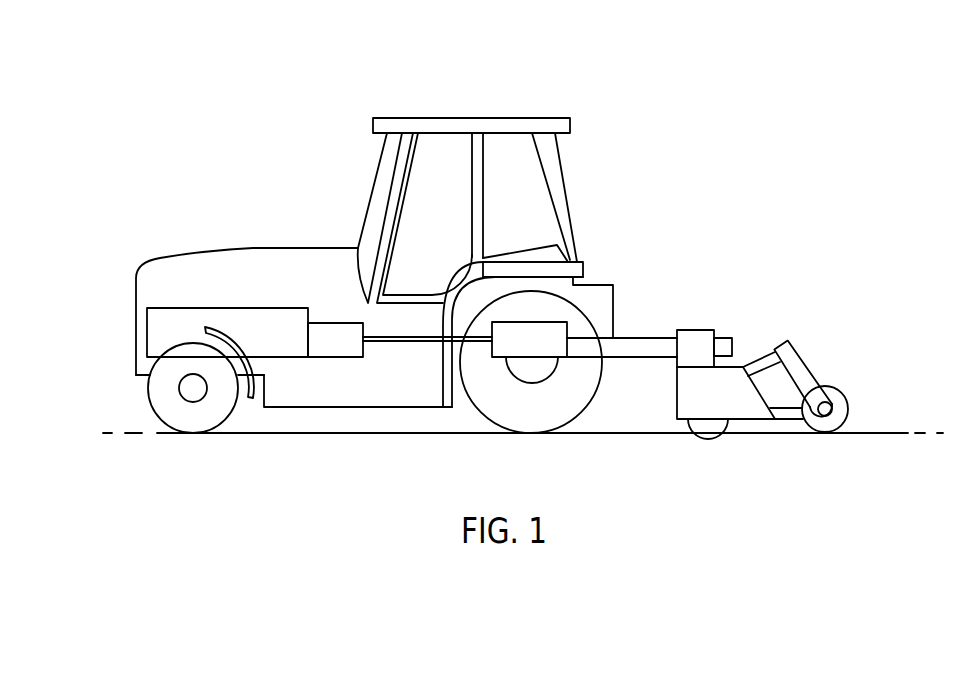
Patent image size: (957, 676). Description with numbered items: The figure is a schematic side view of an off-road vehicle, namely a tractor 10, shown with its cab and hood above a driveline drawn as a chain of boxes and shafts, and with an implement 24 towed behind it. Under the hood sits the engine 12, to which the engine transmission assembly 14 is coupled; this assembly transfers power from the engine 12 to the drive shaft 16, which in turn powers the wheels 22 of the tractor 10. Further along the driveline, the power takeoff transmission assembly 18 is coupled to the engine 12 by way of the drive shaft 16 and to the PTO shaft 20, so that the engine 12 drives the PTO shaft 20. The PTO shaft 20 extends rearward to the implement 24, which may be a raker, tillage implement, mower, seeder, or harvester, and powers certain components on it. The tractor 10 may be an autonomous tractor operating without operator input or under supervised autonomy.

The tractor 10 is at (610, 58).
The engine 12 is at (227, 308).
The engine transmission assembly 14 is at (335, 357).
The drive shaft 16 is at (430, 341).
The power takeoff (PTO) transmission assembly 18 is at (568, 328).
The PTO shaft 20 is at (555, 358).
The wheels 22 is at (158, 400).
The implement 24 is at (752, 313).